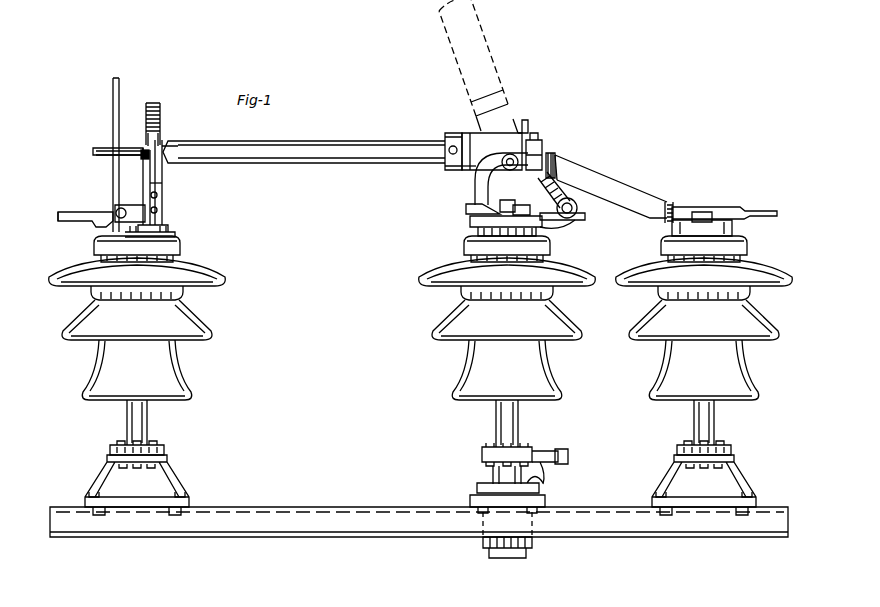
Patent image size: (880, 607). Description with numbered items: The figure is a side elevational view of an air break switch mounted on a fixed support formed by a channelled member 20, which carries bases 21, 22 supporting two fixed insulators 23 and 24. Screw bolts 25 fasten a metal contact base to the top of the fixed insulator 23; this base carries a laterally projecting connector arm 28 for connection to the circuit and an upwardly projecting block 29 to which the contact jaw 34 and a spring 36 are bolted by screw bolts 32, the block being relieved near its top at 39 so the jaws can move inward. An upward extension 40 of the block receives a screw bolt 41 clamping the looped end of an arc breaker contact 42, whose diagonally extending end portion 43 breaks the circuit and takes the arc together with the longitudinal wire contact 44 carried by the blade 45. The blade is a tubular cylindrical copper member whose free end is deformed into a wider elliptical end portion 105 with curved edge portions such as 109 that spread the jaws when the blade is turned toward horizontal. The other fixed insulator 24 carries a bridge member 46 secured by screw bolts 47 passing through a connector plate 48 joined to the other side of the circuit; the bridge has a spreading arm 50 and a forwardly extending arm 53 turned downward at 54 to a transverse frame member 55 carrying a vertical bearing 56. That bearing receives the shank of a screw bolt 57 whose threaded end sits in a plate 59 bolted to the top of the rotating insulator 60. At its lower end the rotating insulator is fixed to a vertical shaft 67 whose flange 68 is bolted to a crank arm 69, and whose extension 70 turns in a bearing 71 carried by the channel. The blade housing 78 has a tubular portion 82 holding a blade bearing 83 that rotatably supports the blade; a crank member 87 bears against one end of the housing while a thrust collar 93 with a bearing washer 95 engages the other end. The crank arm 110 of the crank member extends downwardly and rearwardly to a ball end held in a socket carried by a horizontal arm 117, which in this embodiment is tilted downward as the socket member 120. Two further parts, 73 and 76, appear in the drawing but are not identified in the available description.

The channelled member 20 is at (371, 533).
The base 21 is at (168, 479).
The base 22 is at (735, 475).
The fixed insulator 23 is at (189, 383).
The fixed insulator 24 is at (753, 382).
The screw bolts 25 is at (144, 214).
The connector arm 28 is at (82, 226).
The block 29 is at (150, 183).
The screw bolts 32 is at (158, 210).
The contact jaw 34 is at (161, 114).
The spring 36 is at (158, 141).
The relieved portion 39 is at (162, 186).
The upward extension 40 is at (116, 212).
The screw bolt 41 is at (116, 213).
The arc breaker contact 42 is at (113, 147).
The diagonally extending end portion 43 is at (113, 104).
The wire contact 44 is at (97, 155).
The blade 45 is at (348, 143).
The bridge member 46 is at (628, 192).
The screw bolts 47 is at (701, 212).
The connector plate 48 is at (725, 209).
The spreading arm 50 is at (590, 185).
The forwardly extending arm 53 is at (552, 160).
The downwardly turned portion 54 is at (475, 196).
The transverse frame member 55 is at (467, 210).
The vertical bearing 56 is at (524, 207).
The screw bolt 57 is at (509, 200).
The plate 59 is at (471, 227).
The rotating insulator 60 is at (553, 374).
The vertical shaft 67 is at (522, 421).
The flange 68 is at (534, 451).
The crank arm 69 is at (550, 463).
The shaft extension 70 is at (492, 472).
The bearing 71 is at (489, 493).
The latch 73 is at (535, 149).
The pivot pin 76 is at (510, 171).
The blade housing 78 is at (471, 137).
The tubular portion 82 is at (465, 170).
The blade bearing 83 is at (447, 141).
The crank member 87 is at (525, 133).
The thrust collar 93 is at (445, 155).
The bearing washer 95 is at (466, 154).
The elliptical end portion 105 is at (177, 151).
The curved edge portion 109 is at (145, 160).
The crank arm 110 is at (577, 209).
The horizontal arm 117 is at (545, 227).
The socket member 120 is at (585, 220).